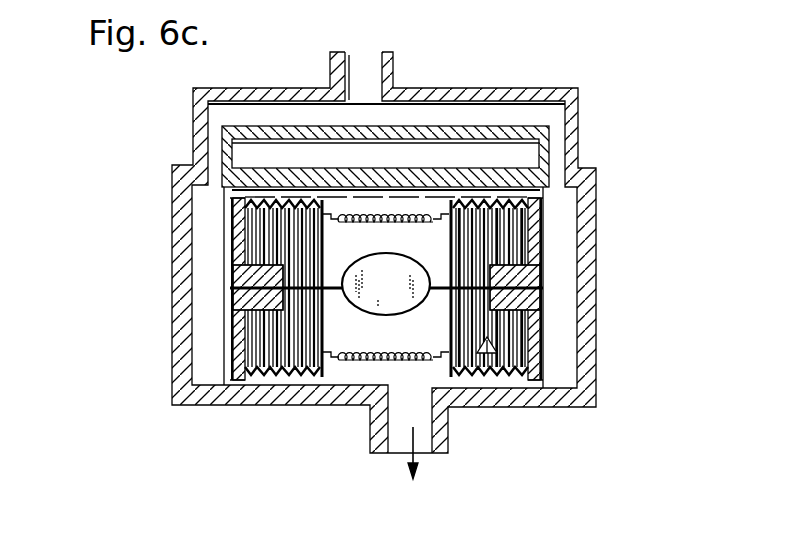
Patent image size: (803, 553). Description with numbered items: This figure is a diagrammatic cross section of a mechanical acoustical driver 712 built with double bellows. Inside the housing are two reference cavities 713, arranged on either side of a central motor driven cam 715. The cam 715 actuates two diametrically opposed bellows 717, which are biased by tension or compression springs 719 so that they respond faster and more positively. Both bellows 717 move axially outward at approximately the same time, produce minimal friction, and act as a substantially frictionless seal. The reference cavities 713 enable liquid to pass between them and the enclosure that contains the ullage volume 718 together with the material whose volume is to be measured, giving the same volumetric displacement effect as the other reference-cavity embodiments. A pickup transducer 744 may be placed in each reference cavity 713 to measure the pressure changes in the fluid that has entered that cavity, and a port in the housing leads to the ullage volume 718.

The mechanical acoustical driver 712 is at (597, 128).
The reference cavity 713 is at (283, 352).
The motor driven cam 715 is at (370, 292).
The bellows 717 is at (255, 207).
The tension or compression springs 719 is at (410, 212).
The pickup transducer 744 is at (496, 354).
The ullage volume 718 is at (430, 445).